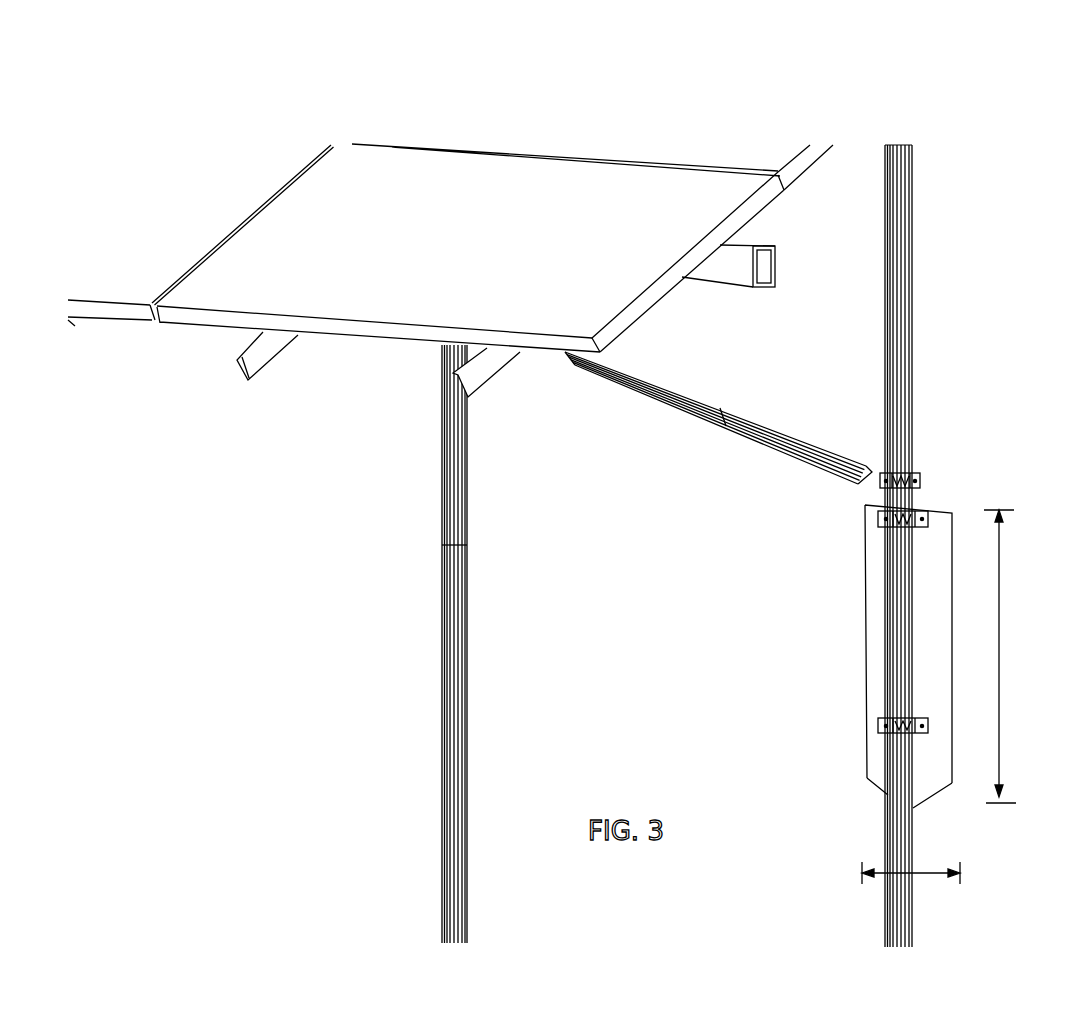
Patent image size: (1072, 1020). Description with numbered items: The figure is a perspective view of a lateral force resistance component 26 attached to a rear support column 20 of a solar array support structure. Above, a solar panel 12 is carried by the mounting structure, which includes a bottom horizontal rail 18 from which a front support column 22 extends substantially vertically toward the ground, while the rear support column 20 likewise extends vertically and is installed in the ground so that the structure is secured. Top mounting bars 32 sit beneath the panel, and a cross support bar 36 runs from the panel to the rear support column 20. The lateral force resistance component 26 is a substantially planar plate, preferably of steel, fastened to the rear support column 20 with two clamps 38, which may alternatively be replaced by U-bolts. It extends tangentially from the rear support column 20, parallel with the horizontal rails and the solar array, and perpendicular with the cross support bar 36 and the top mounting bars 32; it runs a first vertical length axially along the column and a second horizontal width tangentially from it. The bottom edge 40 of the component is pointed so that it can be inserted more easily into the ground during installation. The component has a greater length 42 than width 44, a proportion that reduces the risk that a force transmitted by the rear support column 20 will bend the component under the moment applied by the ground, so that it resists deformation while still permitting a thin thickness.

The solar panel 12 is at (460, 203).
The bottom horizontal rail 18 is at (728, 272).
The rear support column 20 is at (898, 313).
The front support column 22 is at (450, 660).
The lateral force resistance component 26 is at (875, 615).
The top mounting bar 32 is at (477, 372).
The cross support bar 36 is at (723, 413).
The clamp 38 is at (927, 513).
The bottom edge 40 is at (927, 797).
The length 42 is at (1003, 647).
The width 44 is at (917, 877).